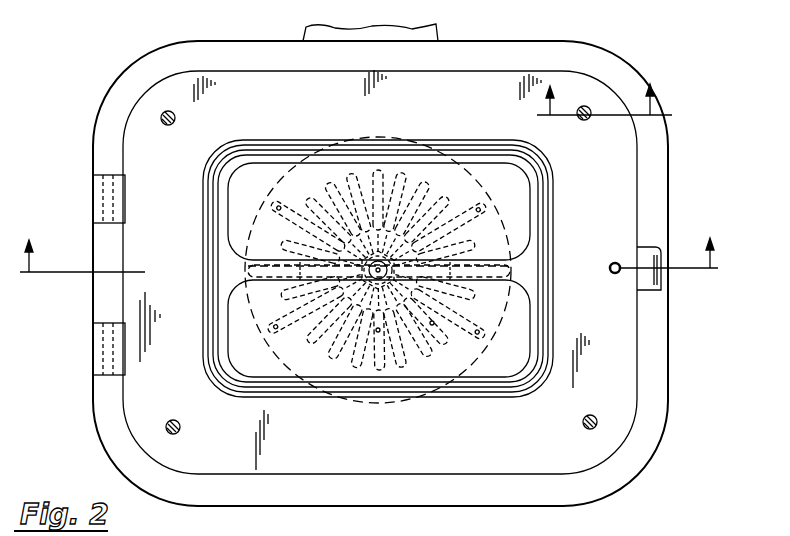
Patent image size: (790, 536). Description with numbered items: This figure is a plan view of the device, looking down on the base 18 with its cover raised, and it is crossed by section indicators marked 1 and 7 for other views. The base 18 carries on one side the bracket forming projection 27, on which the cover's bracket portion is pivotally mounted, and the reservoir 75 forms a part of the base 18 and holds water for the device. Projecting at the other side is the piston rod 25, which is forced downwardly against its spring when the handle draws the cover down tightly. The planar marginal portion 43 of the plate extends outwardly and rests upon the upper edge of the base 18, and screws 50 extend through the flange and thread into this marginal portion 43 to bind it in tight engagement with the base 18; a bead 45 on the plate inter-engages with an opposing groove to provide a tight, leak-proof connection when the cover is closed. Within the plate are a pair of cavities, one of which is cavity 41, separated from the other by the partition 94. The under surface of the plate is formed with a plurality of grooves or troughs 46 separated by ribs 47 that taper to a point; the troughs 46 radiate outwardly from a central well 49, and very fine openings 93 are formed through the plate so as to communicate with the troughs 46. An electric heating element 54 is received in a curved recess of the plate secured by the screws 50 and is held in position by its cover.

The base 18 is at (106, 113).
The reservoir 75 is at (439, 28).
The bracket forming projection 27 is at (96, 211).
The screws 50 is at (176, 120).
The bead 45 is at (548, 200).
The cavity 41 is at (514, 183).
The well 49 is at (365, 135).
The ribs 47 is at (386, 142).
The grooves or troughs 46 is at (281, 149).
The fine openings 93 is at (272, 334).
The partition 94 is at (462, 280).
The electric heating element 54 is at (440, 141).
The planar marginal portion 43 is at (626, 202).
The piston rod 25 is at (620, 262).
The section line 1- 1 is at (370, 261).
The section line 7- 7 is at (604, 106).